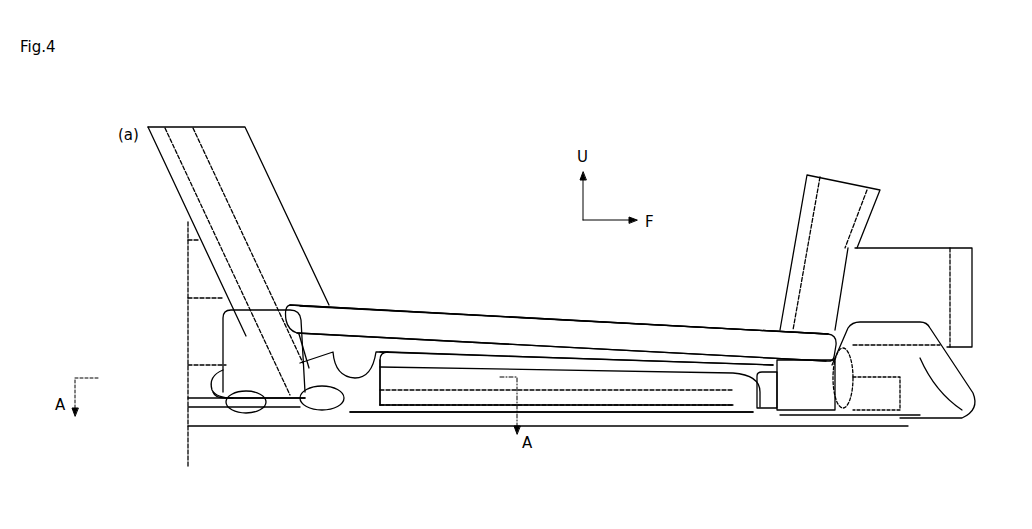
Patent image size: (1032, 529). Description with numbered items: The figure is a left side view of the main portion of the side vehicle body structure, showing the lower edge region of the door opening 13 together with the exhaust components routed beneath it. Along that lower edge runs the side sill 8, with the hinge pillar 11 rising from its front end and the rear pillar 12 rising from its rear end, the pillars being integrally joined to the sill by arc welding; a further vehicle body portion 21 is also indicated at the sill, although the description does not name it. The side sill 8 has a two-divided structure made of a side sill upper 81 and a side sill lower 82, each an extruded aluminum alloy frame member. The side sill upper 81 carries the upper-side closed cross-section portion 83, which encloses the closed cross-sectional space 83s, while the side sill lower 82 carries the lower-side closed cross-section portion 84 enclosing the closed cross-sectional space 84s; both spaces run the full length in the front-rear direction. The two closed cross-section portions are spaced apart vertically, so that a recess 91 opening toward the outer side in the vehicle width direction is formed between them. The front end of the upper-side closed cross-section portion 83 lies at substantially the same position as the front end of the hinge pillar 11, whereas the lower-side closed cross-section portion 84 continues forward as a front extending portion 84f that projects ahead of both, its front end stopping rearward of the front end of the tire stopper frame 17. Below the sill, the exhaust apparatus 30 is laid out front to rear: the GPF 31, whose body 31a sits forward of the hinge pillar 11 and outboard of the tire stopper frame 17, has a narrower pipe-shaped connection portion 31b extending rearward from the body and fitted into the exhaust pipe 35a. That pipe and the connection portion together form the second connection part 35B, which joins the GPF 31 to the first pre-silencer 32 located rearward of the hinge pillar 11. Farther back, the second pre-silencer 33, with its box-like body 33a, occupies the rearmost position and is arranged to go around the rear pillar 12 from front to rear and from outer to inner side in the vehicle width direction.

The side sill 8 is at (697, 324).
The hinge pillar 11 is at (876, 222).
The rear pillar 12 is at (292, 228).
The door opening 13 is at (560, 257).
The tire stopper frame 17 is at (927, 248).
The vehicle floor 21 is at (210, 300).
The exhaust apparatus 30 is at (555, 423).
The GPF 31 is at (897, 322).
The body 31a is at (912, 417).
The connection portion 31b is at (800, 410).
The first pre-silencer 32 is at (618, 410).
The second pre-silencer 33 is at (263, 403).
The body 33a is at (243, 372).
The exhaust pipe 35a is at (195, 400).
The second connection part 35B is at (825, 460).
The side sill upper 81 is at (583, 320).
The side sill lower 82 is at (618, 425).
The upper-side closed cross-section portion 83 is at (497, 328).
The closed cross-sectional space 83s is at (410, 312).
The lower-side closed cross-section portion 84 is at (578, 420).
The closed cross-sectional space 84s is at (467, 418).
The front extending portion 84f is at (862, 418).
The recess 91 is at (355, 348).